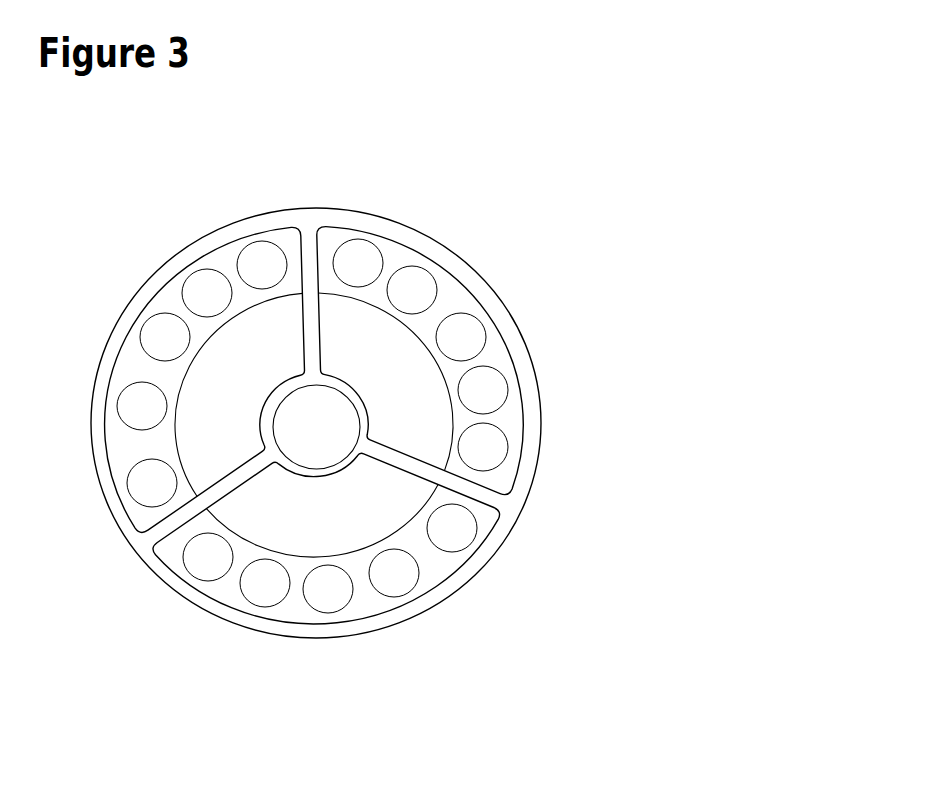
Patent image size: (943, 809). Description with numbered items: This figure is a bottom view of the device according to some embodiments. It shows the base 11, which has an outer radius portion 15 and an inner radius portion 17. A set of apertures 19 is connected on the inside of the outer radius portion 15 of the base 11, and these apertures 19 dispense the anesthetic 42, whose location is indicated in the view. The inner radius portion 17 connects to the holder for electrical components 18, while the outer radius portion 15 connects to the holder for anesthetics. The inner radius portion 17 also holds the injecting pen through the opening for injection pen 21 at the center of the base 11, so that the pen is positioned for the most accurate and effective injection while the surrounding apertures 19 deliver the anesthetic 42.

The base 11 is at (152, 562).
The outer radius portion 15 is at (525, 355).
The inner radius portion 17 is at (323, 476).
The holder for electrical components 18 is at (283, 525).
The apertures 19 is at (397, 590).
The opening for injection pen 21 is at (335, 433).
The anesthetic 42 is at (448, 523).